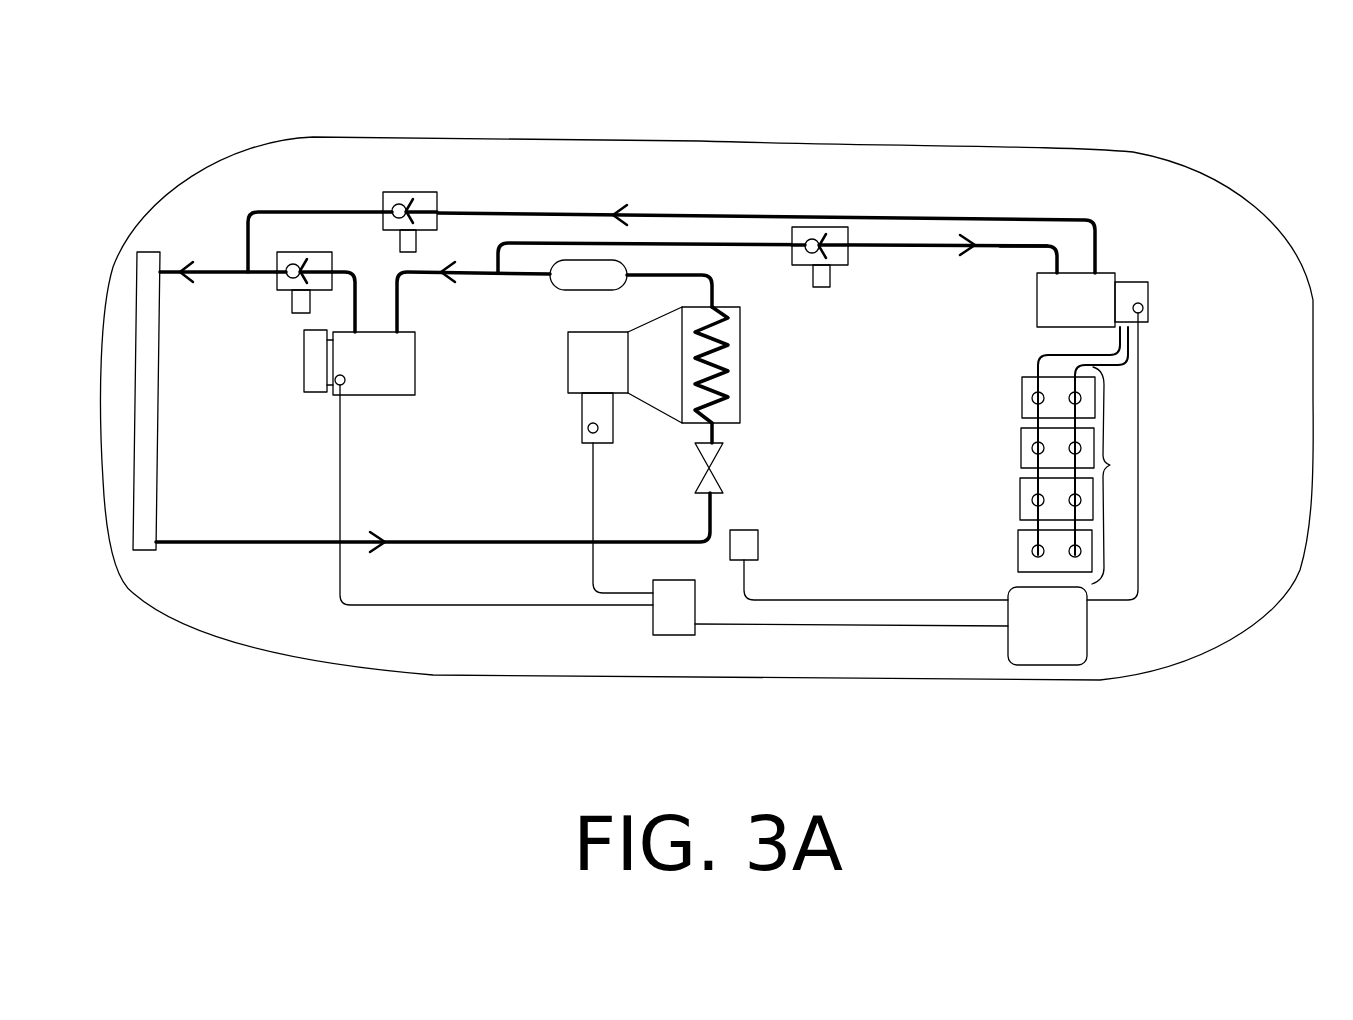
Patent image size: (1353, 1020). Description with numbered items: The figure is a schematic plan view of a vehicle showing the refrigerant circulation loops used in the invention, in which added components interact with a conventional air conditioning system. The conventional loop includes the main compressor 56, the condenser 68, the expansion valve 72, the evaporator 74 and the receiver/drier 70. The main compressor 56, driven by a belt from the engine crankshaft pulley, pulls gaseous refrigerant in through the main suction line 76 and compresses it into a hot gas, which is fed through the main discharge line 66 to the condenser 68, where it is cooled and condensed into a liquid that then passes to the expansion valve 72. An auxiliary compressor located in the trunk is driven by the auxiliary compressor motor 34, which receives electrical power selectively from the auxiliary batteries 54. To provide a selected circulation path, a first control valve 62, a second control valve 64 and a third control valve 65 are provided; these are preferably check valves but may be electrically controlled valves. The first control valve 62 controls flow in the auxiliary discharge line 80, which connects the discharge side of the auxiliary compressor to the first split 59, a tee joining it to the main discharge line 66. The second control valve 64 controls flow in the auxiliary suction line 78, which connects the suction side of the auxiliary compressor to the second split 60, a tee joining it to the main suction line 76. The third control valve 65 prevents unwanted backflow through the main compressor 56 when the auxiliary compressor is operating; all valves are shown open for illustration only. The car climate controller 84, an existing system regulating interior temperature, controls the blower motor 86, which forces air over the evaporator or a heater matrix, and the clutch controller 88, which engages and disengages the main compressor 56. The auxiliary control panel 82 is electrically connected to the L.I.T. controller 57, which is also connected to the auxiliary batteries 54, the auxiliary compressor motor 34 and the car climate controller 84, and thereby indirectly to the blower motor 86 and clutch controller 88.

The auxiliary compressor motor 34 is at (1150, 293).
The auxiliary batteries 54 is at (1102, 465).
The main compressor 56 is at (375, 395).
The L.I.T. controller 57 is at (1047, 665).
The first split 59 is at (240, 262).
The second split 60 is at (495, 268).
The first control valve 62 is at (393, 192).
The second control valve 64 is at (802, 227).
The third control valve 65 is at (293, 252).
The main discharge line 66 is at (180, 262).
The condenser 68 is at (142, 536).
The receiver/drier 70 is at (568, 292).
The expansion valve 72 is at (723, 457).
The evaporator 74 is at (745, 365).
The main suction line 76 is at (535, 277).
The auxiliary suction line 78 is at (1012, 252).
The auxiliary discharge line 80 is at (1098, 240).
The auxiliary control panel 82 is at (758, 545).
The car climate controller 84 is at (673, 635).
The blower motor 86 is at (603, 437).
The clutch controller 88 is at (337, 385).